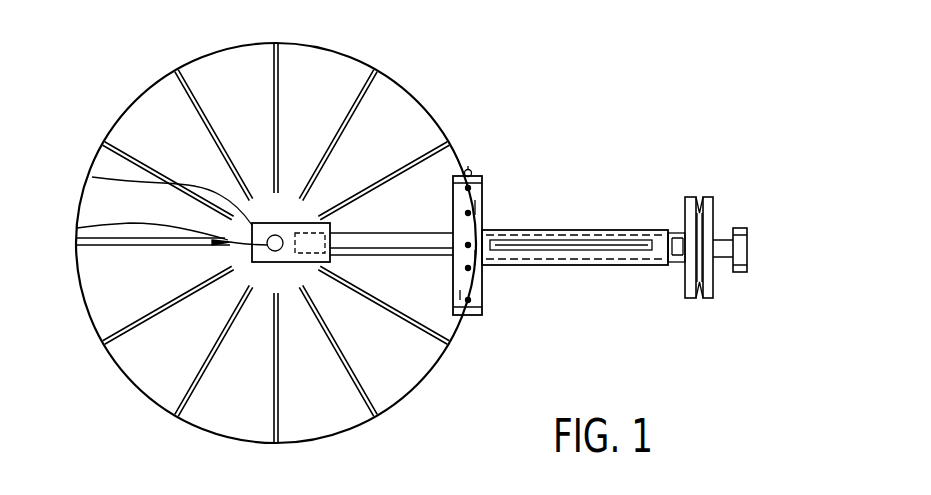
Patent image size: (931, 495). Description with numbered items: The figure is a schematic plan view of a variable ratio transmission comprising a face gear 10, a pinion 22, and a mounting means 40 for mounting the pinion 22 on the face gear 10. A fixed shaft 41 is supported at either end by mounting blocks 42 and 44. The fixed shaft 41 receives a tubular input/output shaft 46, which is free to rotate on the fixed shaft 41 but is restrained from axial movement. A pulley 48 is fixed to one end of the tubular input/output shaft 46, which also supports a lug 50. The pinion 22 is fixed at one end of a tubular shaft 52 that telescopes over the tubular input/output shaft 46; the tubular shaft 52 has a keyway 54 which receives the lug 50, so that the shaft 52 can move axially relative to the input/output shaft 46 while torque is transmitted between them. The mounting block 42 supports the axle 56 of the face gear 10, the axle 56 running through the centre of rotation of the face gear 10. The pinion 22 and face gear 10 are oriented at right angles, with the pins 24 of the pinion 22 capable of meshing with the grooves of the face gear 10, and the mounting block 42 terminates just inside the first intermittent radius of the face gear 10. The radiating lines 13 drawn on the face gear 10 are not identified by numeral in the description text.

The face gear 10 is at (428, 112).
The spokes 13 is at (375, 68).
The pinion 22 is at (483, 185).
The pins 24 is at (469, 170).
The mounting means 40 is at (580, 267).
The fixed shaft 41 is at (432, 251).
The mounting block 42 is at (92, 177).
The mounting block 44 is at (747, 235).
The tubular input/output shaft 46 is at (677, 233).
The pulley 48 is at (713, 206).
The lug 50 is at (519, 233).
The tubular shaft 52 is at (657, 267).
The keyway 54 is at (592, 243).
The axle 56 is at (77, 228).